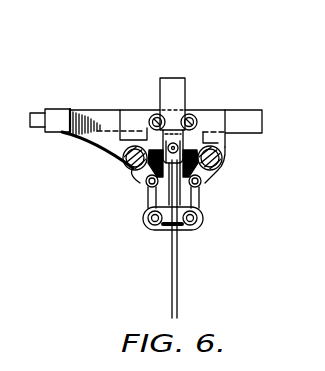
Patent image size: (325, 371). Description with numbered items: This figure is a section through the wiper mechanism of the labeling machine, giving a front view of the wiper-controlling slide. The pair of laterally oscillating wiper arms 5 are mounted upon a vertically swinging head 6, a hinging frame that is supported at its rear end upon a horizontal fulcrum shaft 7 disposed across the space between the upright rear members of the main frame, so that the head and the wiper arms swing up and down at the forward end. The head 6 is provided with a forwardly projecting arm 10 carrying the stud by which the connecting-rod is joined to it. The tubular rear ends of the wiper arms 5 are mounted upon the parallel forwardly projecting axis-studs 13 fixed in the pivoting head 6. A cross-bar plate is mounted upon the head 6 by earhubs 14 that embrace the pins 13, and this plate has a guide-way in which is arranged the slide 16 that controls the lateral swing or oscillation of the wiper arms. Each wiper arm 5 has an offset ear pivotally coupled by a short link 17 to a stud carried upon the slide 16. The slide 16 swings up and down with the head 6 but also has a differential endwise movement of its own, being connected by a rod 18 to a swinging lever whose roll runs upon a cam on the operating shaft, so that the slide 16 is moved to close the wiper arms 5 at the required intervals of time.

The wiper arms 5 is at (222, 168).
The swinging head 6 is at (137, 122).
The fulcrum shaft 7 is at (262, 122).
The forwardly projecting arm 10 is at (56, 118).
The axis-studs 13 is at (123, 163).
The earhubs 14 is at (140, 176).
The slide 16 is at (174, 124).
The link 17 is at (192, 148).
The rod 18 is at (178, 271).